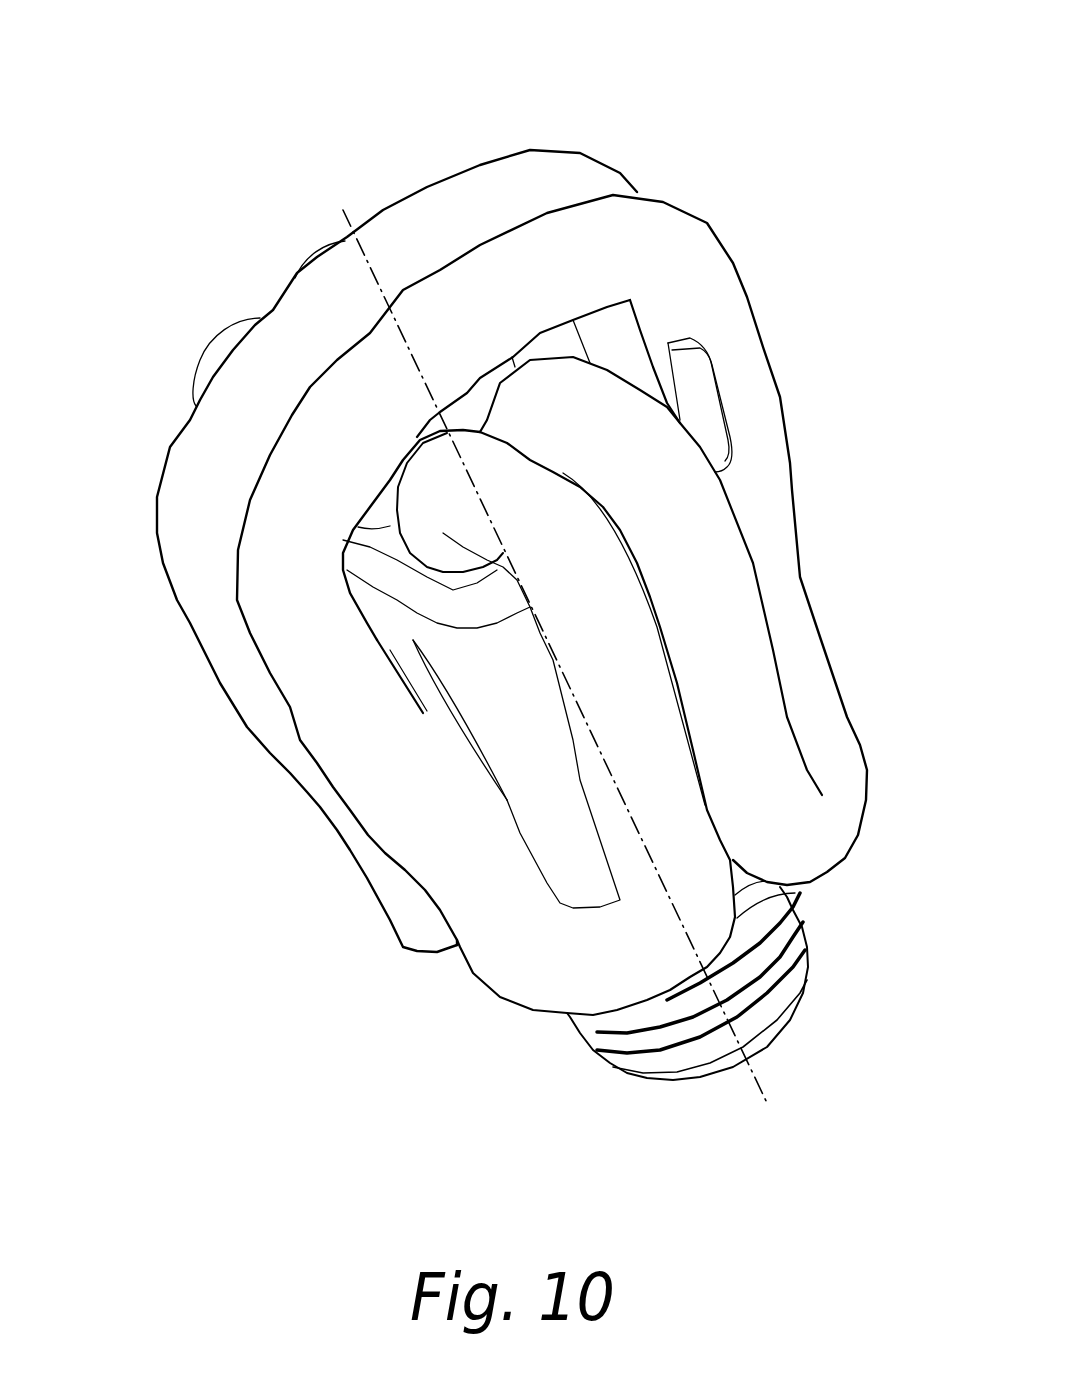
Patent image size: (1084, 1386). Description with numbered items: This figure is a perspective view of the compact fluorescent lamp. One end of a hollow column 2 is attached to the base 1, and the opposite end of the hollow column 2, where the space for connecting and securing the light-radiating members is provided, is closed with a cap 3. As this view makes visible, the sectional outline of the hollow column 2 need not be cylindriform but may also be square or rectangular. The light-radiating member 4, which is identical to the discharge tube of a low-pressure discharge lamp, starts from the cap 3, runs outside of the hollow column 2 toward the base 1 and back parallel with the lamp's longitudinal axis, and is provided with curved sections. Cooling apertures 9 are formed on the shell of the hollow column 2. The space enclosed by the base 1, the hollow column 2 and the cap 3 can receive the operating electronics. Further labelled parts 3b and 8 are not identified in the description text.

The base 1 is at (665, 1040).
The hollow column 2 is at (527, 750).
The cap 3 is at (457, 603).
The tube section 3b is at (443, 563).
The light-radiating member 4 is at (420, 243).
The holder element 8 is at (692, 368).
The cooling apertures 9 is at (463, 733).